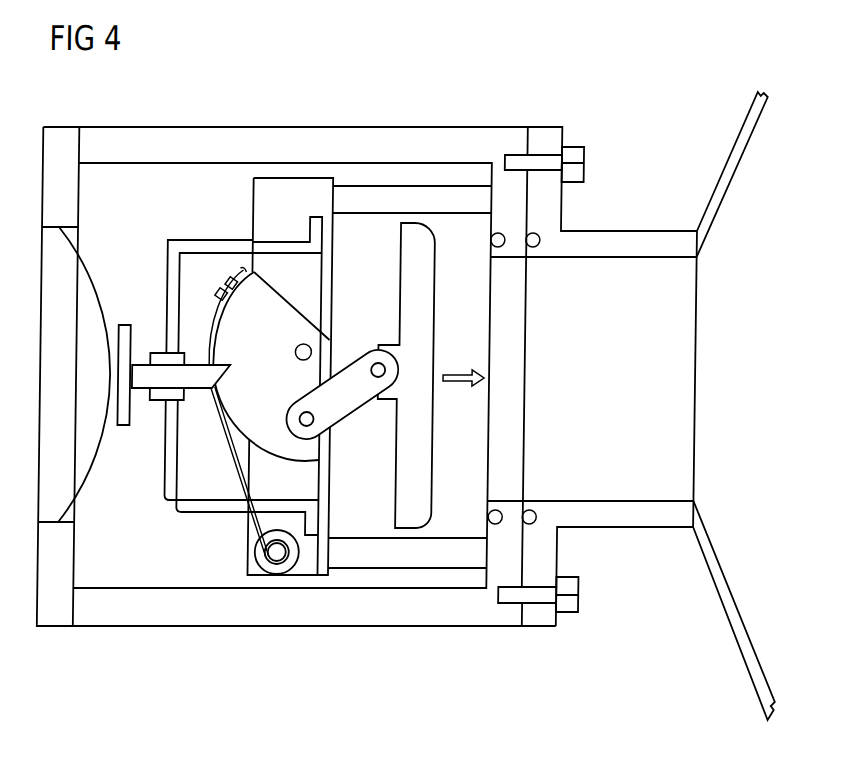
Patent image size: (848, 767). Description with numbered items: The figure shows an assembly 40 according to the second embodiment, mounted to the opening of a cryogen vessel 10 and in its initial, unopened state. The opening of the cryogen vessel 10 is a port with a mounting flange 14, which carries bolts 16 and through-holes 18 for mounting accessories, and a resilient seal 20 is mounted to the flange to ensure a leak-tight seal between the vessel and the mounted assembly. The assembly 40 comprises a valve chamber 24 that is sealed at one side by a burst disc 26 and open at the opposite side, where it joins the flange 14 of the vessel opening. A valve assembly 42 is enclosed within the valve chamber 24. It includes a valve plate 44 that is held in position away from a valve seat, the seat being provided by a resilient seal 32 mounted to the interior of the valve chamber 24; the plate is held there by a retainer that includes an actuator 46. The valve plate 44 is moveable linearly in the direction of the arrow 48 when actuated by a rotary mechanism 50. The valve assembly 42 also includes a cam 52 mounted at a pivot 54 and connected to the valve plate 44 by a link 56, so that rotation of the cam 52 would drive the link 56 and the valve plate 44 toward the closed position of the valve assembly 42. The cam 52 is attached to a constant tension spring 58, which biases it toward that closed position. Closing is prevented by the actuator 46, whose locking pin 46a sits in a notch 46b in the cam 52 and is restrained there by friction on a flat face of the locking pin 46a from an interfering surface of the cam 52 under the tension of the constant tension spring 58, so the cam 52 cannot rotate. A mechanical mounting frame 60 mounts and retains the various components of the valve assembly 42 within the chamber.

The cryogen vessel 10 is at (727, 185).
The mounting flange 14 is at (537, 617).
The bolts 16 is at (584, 156).
The through-holes 18 is at (547, 168).
The resilient seal 20 is at (538, 246).
The valve chamber 24 is at (172, 127).
The burst disc 26 is at (100, 419).
The resilient seal 32 is at (502, 510).
The assembly 40 is at (286, 649).
The valve assembly 42 is at (183, 529).
The valve plate 44 is at (404, 250).
The actuator 46 is at (129, 325).
The locking pin 46a is at (203, 389).
The notch 46b is at (219, 363).
The arrow 48 is at (466, 370).
The rotary mechanism 50 is at (345, 344).
The cam 52 is at (284, 304).
The pivot 54 is at (303, 352).
The link 56 is at (306, 400).
The constant tension spring 58 is at (257, 560).
The mechanical mounting frame 60 is at (171, 243).